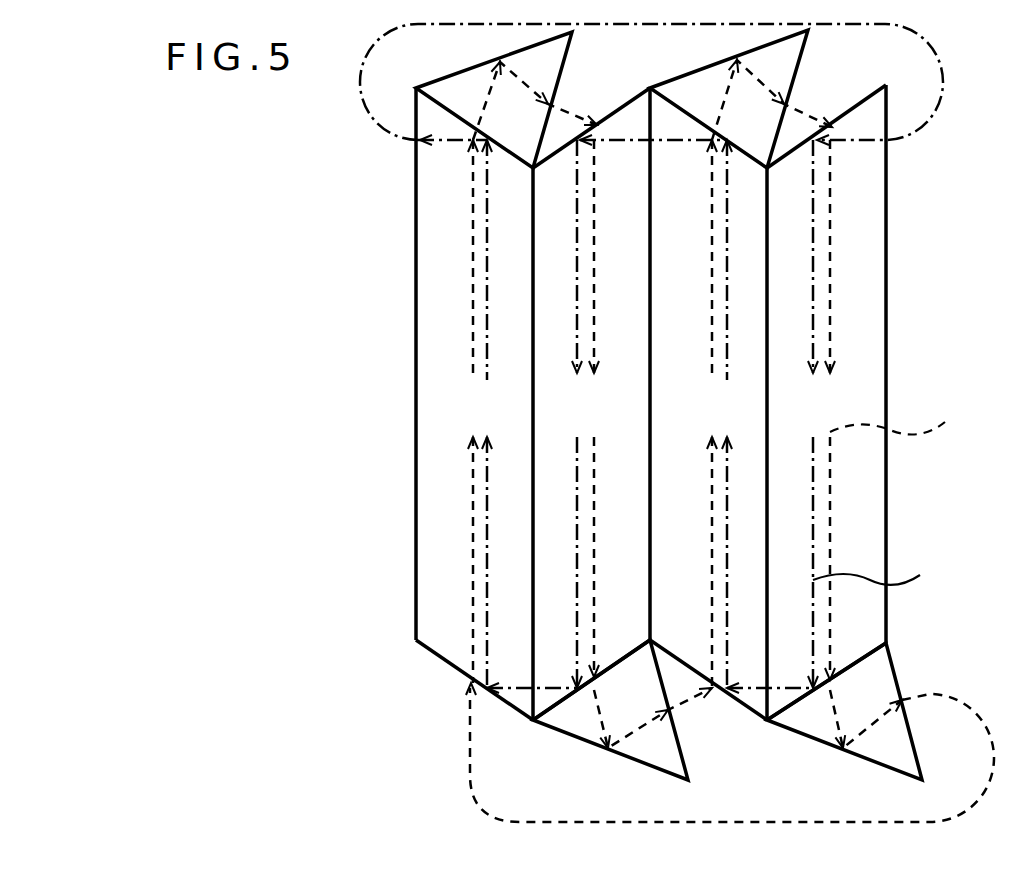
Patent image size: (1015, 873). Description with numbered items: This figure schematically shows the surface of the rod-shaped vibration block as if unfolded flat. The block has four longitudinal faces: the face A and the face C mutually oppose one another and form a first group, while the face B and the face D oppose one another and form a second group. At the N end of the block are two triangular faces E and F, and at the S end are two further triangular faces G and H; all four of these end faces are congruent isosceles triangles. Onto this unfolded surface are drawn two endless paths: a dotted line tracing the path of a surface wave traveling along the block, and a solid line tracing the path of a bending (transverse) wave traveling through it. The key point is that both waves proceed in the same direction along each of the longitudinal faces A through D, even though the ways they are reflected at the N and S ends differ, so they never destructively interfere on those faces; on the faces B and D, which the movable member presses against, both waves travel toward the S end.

The face A is at (821, 414).
The face B is at (479, 414).
The face C is at (584, 414).
The face D is at (719, 414).
The face E is at (844, 711).
The face F is at (623, 710).
The face G is at (507, 100).
The face H is at (742, 99).